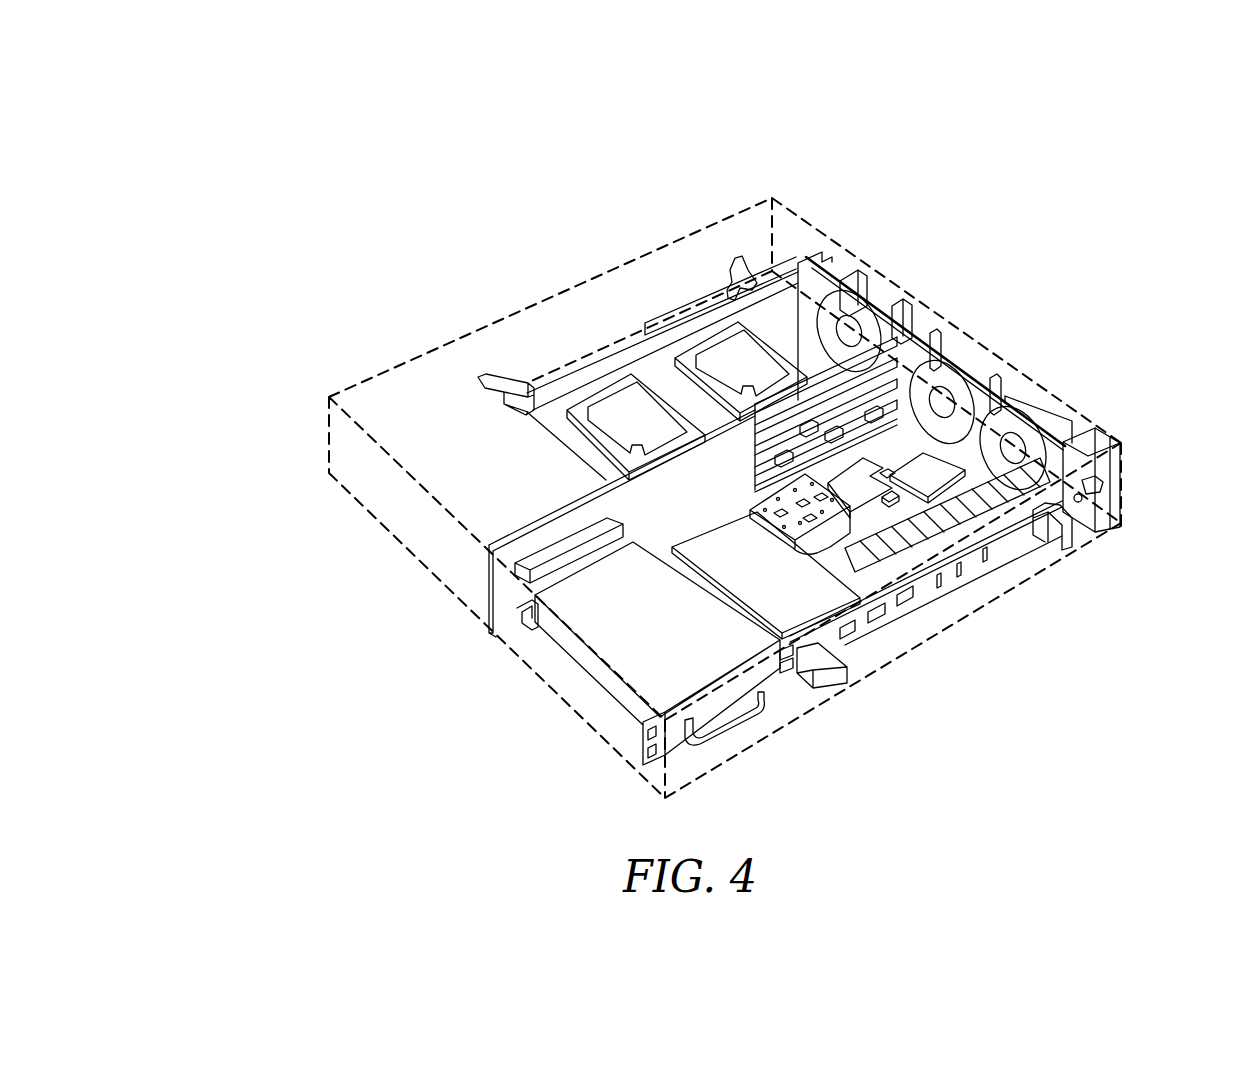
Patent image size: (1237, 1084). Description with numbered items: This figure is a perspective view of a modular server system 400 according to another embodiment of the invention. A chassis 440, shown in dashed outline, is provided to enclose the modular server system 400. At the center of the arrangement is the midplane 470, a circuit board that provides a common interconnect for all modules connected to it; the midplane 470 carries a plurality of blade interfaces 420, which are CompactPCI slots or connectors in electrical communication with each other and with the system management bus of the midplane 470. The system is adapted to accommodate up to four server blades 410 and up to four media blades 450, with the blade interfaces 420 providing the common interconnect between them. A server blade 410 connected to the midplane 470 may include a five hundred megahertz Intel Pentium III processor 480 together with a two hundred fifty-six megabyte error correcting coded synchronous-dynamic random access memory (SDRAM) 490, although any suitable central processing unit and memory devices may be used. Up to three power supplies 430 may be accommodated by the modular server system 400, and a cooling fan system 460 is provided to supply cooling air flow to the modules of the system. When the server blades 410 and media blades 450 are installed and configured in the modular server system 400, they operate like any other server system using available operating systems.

The modular server system 400 is at (1022, 134).
The server blades 410 is at (1138, 652).
The blade interfaces 420 is at (835, 375).
The power supplies 430 is at (385, 727).
The chassis 440 is at (270, 390).
The media blades 450 is at (650, 360).
The cooling fan system 460 is at (1092, 192).
The midplane 470 is at (318, 535).
The Intel Pentium III processor 480 is at (1192, 256).
The synchronous-dynamic random access memory (SDRAM) 490 is at (1153, 319).